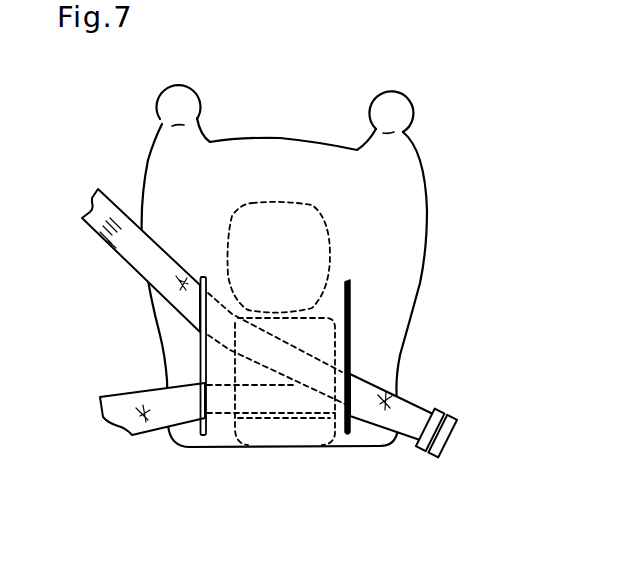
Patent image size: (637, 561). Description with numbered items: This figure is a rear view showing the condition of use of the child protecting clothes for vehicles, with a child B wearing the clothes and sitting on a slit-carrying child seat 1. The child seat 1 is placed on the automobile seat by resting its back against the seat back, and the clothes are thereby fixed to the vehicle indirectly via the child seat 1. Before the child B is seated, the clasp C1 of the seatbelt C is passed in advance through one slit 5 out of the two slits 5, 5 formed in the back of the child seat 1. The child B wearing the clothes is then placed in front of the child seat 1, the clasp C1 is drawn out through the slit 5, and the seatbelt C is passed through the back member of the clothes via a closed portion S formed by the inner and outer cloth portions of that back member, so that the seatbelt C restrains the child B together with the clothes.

The child seat 1 is at (289, 127).
The child B is at (315, 252).
The slit 5 is at (200, 352).
The seatbelt C is at (405, 410).
The clasp C1 is at (453, 440).
The closed portion S is at (233, 398).